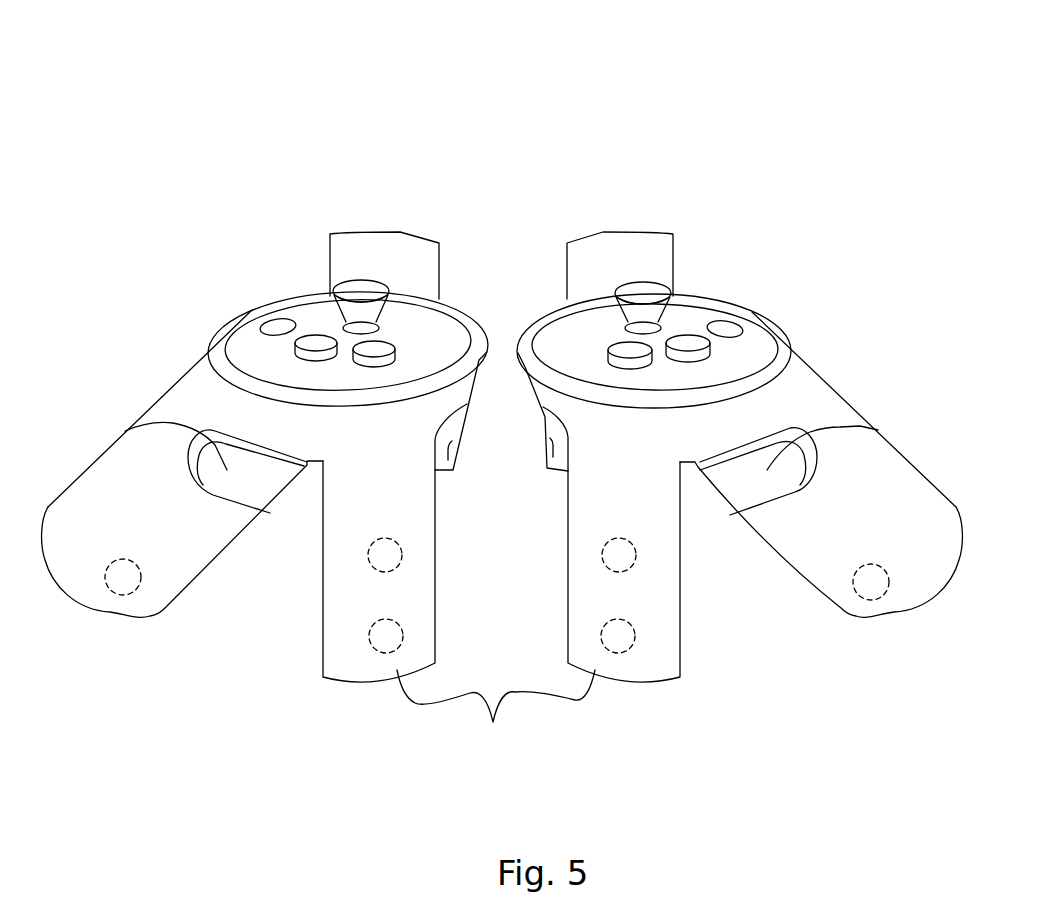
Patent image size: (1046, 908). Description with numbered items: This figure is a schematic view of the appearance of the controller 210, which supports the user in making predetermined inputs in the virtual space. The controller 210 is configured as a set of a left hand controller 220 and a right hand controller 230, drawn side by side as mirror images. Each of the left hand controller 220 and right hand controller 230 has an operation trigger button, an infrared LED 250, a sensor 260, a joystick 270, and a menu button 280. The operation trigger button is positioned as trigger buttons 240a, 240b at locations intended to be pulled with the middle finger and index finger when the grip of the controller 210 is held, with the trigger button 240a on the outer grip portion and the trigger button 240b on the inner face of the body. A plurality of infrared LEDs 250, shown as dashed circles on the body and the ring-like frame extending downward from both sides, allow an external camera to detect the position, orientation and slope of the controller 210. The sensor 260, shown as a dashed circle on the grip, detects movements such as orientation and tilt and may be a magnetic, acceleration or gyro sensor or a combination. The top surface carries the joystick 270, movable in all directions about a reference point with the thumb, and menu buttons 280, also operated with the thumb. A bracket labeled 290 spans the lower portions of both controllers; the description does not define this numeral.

The controller 210 is at (517, 53).
The left hand controller 220 is at (347, 197).
The right hand controller 230 is at (655, 180).
The operation trigger button 240a is at (125, 431).
The operation trigger button 240b is at (543, 438).
The infrared LED 250 is at (613, 556).
The sensor 260 is at (125, 588).
The joystick 270 is at (354, 291).
The menu button 280 is at (316, 337).
The bottom portion 290 is at (496, 713).